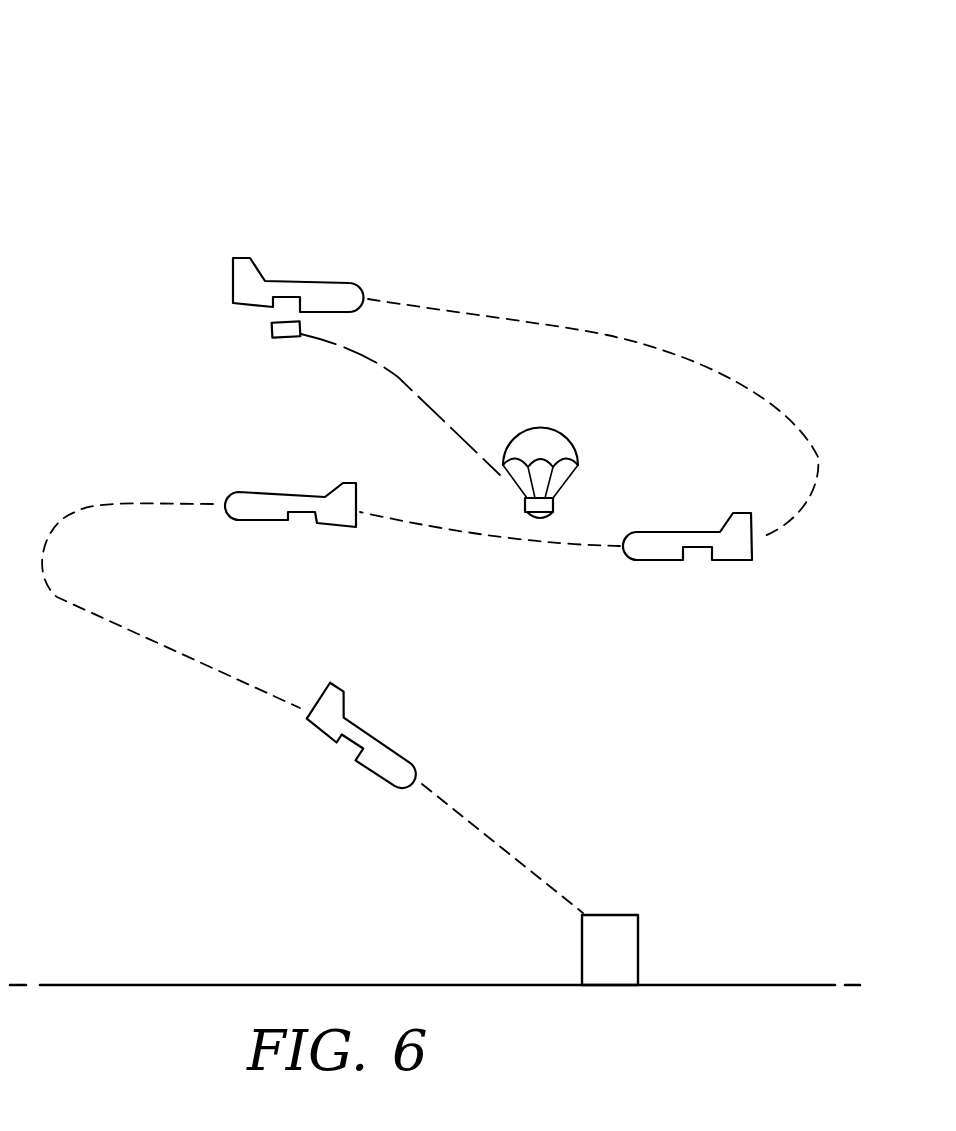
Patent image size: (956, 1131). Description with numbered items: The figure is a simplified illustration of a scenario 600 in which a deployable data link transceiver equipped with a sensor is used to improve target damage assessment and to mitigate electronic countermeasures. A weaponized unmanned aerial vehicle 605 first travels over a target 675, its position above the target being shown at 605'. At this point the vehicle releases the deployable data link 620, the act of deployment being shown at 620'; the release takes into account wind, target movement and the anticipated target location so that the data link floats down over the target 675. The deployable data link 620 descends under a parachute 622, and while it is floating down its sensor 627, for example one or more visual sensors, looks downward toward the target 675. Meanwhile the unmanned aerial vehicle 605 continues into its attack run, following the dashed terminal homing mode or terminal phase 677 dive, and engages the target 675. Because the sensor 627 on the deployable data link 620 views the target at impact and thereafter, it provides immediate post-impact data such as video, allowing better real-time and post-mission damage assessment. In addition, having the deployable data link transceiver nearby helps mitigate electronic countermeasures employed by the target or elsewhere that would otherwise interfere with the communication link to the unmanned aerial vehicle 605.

The package delivery environment 600 is at (122, 200).
The weaponized unmanned aerial vehicle 605 is at (368, 733).
The unmanned aerial vehicle over the target 605' is at (298, 261).
The deployable data link 620 is at (587, 495).
The deployment of the deployable data link 620' is at (335, 398).
The parachute 622 is at (520, 438).
The sensor 627 is at (532, 519).
The target 675 is at (618, 915).
The terminal phase 677 is at (224, 668).